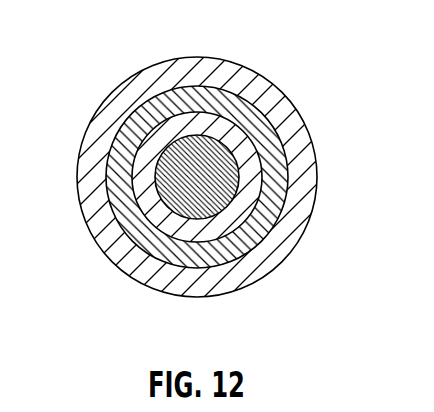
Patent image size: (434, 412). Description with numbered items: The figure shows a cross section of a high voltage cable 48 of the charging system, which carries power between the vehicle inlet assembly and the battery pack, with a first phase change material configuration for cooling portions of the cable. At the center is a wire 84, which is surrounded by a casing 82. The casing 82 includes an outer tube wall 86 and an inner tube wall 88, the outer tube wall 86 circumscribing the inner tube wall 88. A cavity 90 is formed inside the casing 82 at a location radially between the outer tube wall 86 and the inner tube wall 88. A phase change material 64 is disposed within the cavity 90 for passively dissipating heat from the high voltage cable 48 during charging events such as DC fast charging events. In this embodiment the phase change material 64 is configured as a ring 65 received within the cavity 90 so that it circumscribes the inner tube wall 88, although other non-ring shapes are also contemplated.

The high voltage cable 48 is at (219, 159).
The phase change material 64 is at (241, 177).
The ring 65 is at (237, 117).
The casing 82 is at (325, 192).
The wire 84 is at (188, 200).
The outer tube wall 86 is at (282, 240).
The inner tube wall 88 is at (140, 160).
The cavity 90 is at (280, 135).